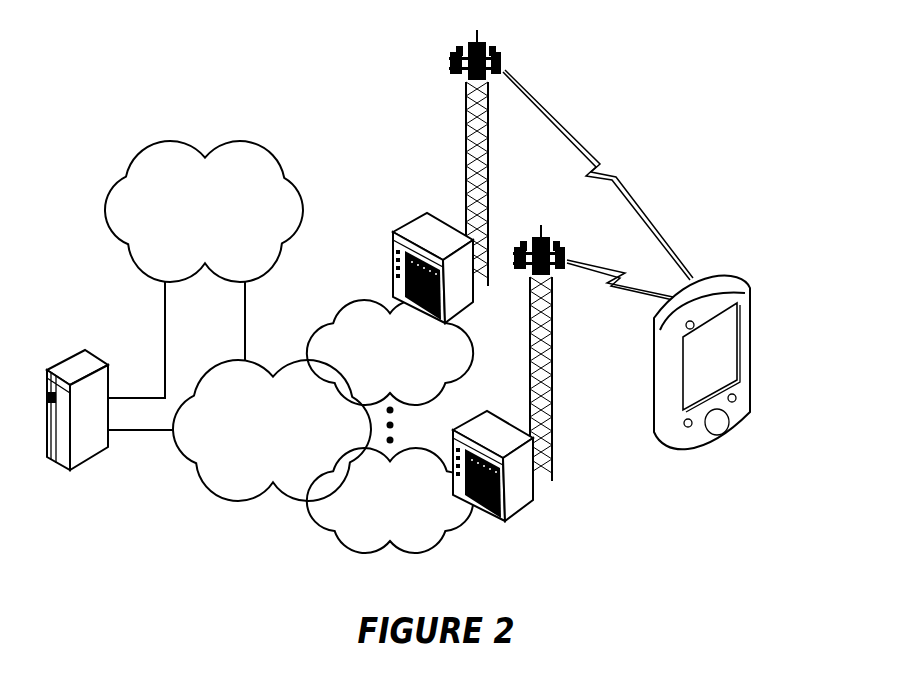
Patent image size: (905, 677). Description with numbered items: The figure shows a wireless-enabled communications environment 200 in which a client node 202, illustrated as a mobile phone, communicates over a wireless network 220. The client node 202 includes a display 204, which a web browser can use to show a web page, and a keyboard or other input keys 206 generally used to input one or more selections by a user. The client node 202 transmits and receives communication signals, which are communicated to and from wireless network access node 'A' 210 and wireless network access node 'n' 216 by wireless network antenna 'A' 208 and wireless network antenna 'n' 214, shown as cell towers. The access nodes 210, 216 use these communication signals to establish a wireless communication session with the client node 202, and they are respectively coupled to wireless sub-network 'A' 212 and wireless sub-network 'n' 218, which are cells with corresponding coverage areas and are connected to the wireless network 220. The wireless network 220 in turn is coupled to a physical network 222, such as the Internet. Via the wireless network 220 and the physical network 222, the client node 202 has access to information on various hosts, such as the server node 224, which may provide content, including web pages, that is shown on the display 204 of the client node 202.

The wireless communication system 200 is at (245, 110).
The client node 202 is at (736, 394).
The display 204 is at (725, 343).
The input keys 206 is at (753, 347).
The wireless network antenna 'A' 208 is at (552, 436).
The wireless network access node 'A' 210 is at (510, 518).
The wireless sub-network 'A' 212 is at (390, 500).
The wireless network antenna 'n' 214 is at (465, 130).
The wireless network access node 'n' 216 is at (418, 213).
The wireless sub-network 'n' 218 is at (390, 352).
The wireless network 220 is at (272, 430).
The physical network 222 is at (204, 211).
The server node 224 is at (80, 467).